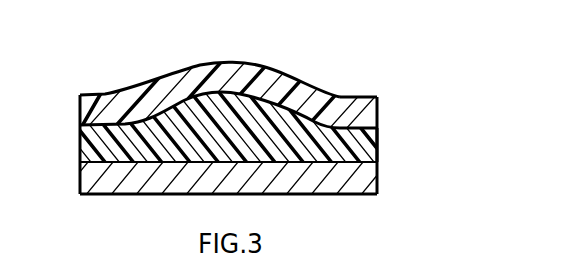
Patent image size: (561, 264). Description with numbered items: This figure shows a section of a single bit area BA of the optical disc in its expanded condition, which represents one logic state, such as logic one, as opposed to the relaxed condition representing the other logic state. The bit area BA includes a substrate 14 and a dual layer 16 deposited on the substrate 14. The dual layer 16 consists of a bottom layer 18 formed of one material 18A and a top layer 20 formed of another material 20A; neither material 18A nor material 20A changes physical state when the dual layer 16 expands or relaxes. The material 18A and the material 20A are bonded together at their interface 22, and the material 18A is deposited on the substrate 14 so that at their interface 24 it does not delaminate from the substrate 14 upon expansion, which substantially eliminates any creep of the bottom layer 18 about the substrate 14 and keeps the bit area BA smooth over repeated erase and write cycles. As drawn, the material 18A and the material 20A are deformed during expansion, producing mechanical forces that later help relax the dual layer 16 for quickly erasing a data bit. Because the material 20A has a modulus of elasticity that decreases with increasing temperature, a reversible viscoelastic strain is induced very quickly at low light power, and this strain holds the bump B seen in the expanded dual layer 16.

The substrate 14 is at (79, 174).
The dual layer 16 is at (66, 131).
The bottom layer 18 is at (380, 137).
The material of the bottom layer 18A is at (372, 153).
The top layer 20 is at (350, 93).
The material of the top layer 20A is at (377, 100).
The interface 22 is at (315, 88).
The interface 24 is at (380, 152).
The bump B is at (267, 79).
The bit area BA is at (245, 119).